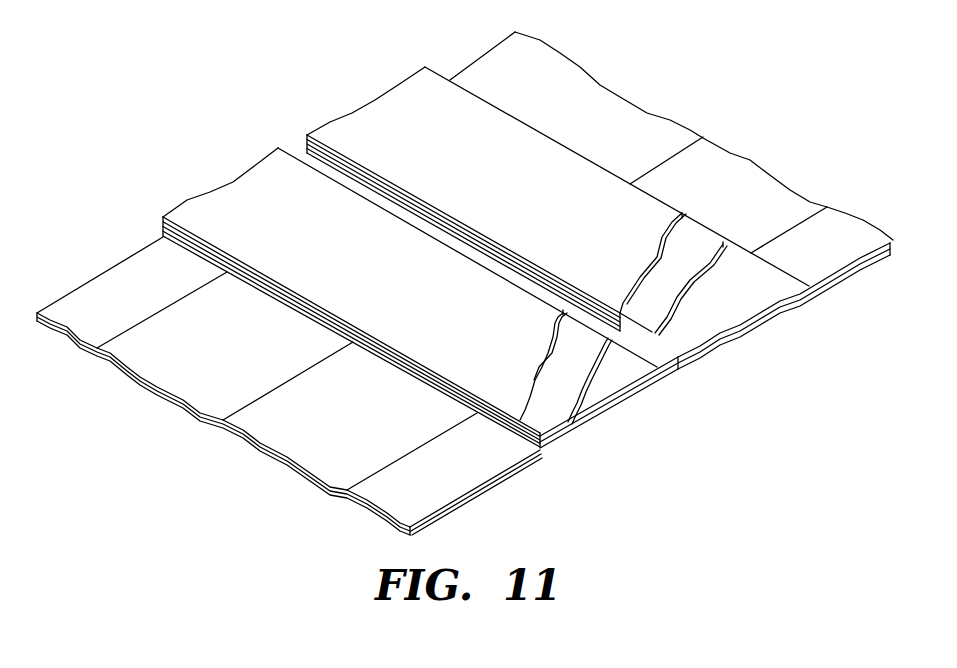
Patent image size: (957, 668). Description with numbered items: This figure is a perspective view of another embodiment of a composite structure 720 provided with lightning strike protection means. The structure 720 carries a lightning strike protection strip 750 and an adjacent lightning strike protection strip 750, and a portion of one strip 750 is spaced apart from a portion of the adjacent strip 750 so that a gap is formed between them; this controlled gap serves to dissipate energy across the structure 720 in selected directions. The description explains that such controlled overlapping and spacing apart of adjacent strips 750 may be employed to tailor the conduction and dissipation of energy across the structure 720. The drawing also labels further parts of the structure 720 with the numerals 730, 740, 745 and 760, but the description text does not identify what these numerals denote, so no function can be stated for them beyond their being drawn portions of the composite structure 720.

The structure 720 is at (274, 128).
The layer stack 730 is at (203, 193).
The base substrate 740 is at (772, 293).
The flexible strip 745 is at (680, 242).
The lightning strike protection strip 750 is at (577, 160).
The substrate tile region 760 is at (645, 117).